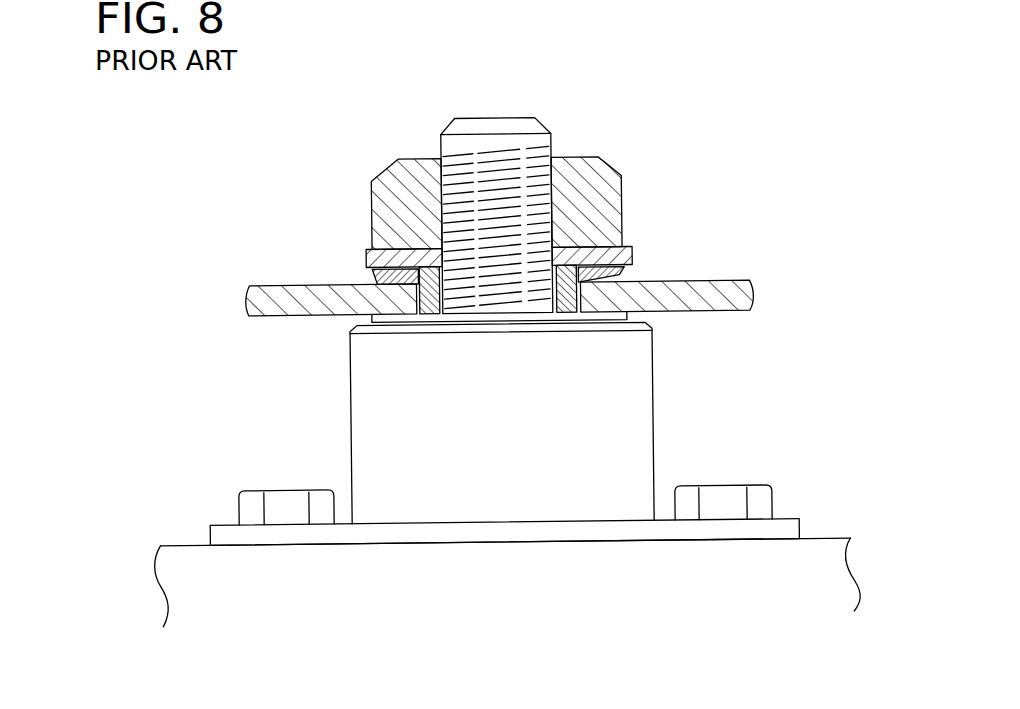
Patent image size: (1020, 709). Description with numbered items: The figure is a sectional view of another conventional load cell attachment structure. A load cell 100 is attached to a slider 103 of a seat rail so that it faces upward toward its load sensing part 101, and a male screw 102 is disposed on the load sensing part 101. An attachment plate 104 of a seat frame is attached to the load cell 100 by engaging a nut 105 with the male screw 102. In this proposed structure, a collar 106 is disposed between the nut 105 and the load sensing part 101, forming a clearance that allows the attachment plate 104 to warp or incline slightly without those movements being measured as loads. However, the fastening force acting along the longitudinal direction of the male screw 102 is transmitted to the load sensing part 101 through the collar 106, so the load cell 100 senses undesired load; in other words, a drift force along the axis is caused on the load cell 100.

The load cell 100 is at (342, 412).
The load sensing part 101 is at (630, 282).
The male screw 102 is at (518, 118).
The slider 103 is at (177, 588).
The attachment plate 104 is at (722, 290).
The nut 105 is at (373, 196).
The collar 106 is at (574, 314).